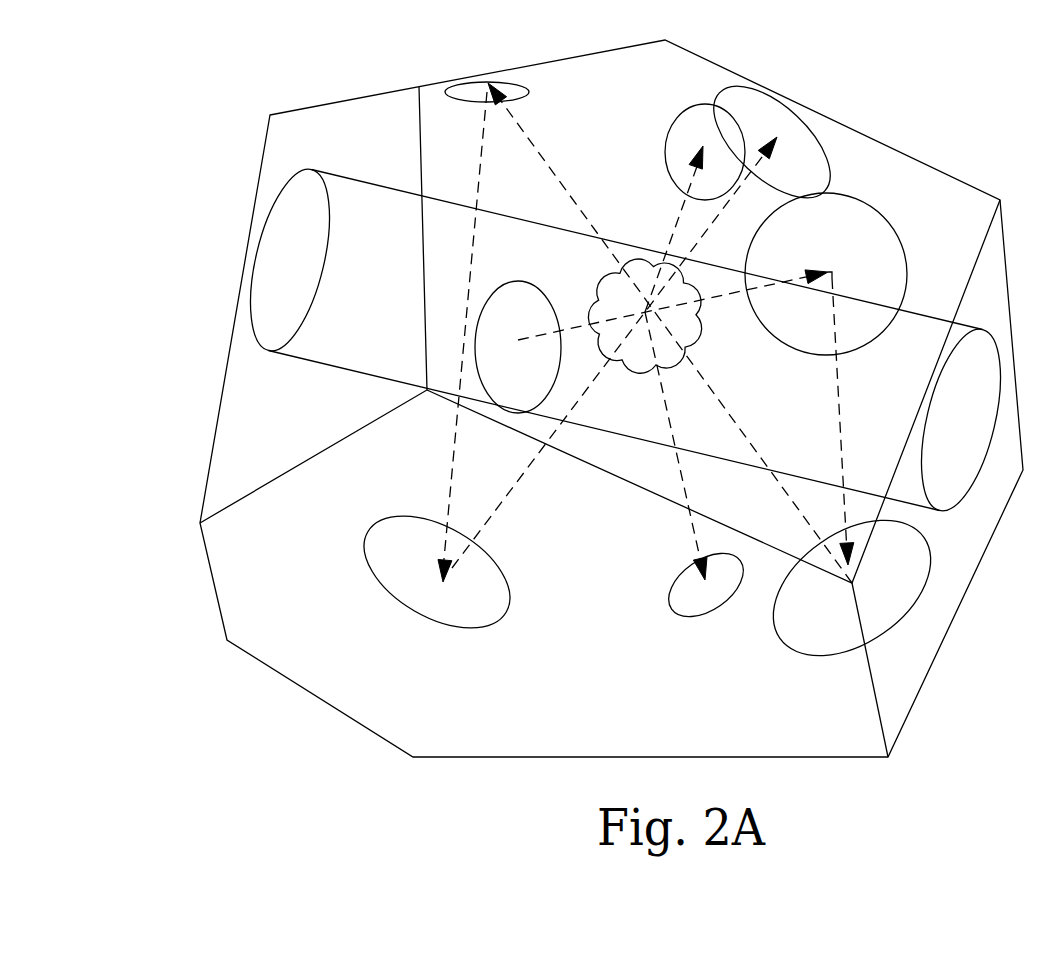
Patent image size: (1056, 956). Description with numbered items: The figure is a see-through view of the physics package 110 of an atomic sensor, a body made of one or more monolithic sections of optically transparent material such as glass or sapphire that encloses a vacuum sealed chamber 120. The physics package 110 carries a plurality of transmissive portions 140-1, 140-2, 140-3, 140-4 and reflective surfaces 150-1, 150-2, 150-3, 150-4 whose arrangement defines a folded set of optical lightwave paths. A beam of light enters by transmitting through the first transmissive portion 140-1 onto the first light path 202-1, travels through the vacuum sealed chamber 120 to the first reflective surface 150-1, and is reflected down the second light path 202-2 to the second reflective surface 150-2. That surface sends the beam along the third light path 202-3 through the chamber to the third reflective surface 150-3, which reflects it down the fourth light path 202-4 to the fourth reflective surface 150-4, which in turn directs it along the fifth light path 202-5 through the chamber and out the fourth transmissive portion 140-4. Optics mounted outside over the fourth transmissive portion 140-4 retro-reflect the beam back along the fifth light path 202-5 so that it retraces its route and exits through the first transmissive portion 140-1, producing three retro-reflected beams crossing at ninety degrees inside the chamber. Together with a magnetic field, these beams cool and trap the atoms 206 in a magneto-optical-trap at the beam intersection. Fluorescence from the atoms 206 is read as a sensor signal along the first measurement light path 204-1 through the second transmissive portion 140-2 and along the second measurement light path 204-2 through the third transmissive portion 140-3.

The physics package 110 is at (150, 102).
The vacuum sealed chamber 120 is at (335, 366).
The first transmissive portion 140-1 is at (530, 282).
The second transmissive portion 140-2 is at (683, 133).
The third transmissive portion 140-3 is at (672, 605).
The fourth transmissive portion 140-4 is at (787, 110).
The first reflective surface 150-1 is at (862, 205).
The second reflective surface 150-2 is at (782, 647).
The third reflective surface 150-3 is at (500, 82).
The fourth reflective surface 150-4 is at (420, 597).
The first light path 202-1 is at (726, 320).
The second light path 202-2 is at (845, 517).
The third light path 202-3 is at (742, 442).
The fourth light path 202-4 is at (483, 137).
The fifth light path 202-5 is at (505, 498).
The first measurement light path 204-1 is at (680, 202).
The second measurement light path 204-2 is at (695, 538).
The atoms 206 is at (638, 258).